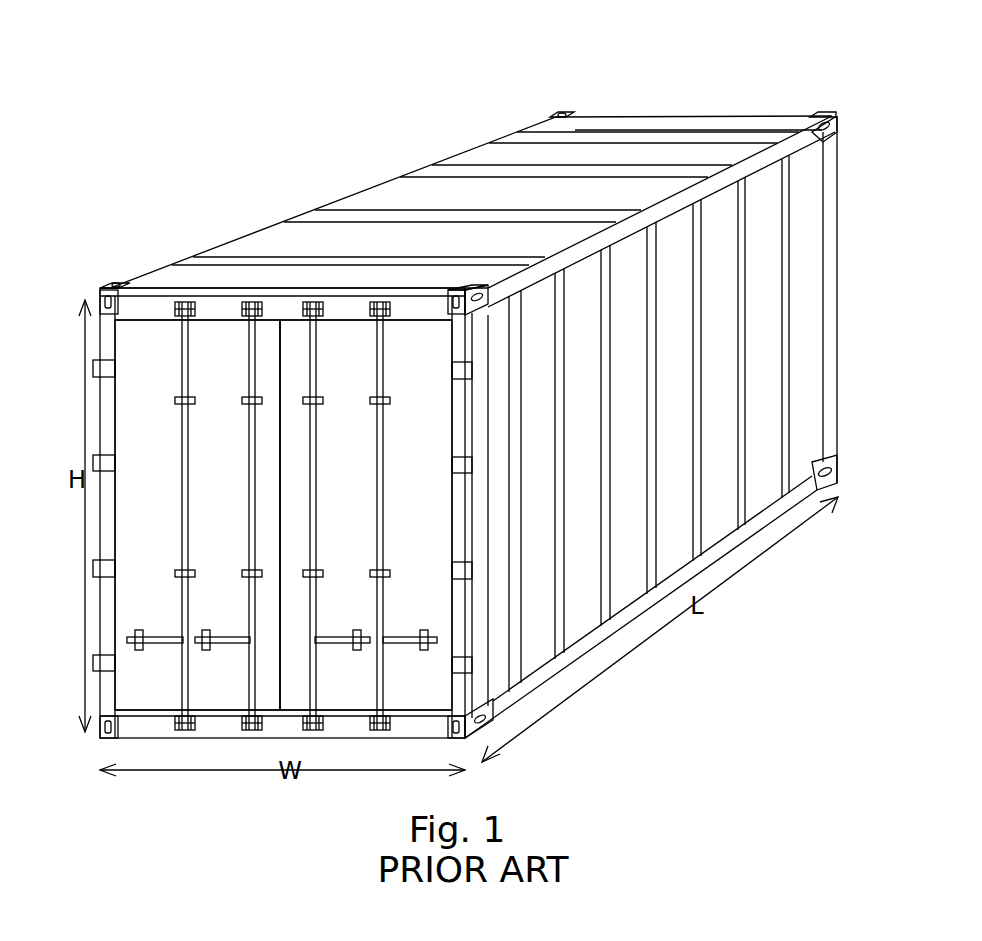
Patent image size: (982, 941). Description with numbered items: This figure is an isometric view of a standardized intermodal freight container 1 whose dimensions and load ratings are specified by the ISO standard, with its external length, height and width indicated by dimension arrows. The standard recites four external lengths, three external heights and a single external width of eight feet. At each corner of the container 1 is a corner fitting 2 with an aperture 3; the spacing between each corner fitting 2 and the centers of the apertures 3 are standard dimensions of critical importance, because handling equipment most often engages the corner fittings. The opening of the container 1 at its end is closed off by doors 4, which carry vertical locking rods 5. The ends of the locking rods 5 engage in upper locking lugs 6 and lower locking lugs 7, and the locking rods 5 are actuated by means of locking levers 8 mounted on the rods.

The intermodal freight container 1 is at (690, 72).
The corner fitting 2 is at (112, 290).
The aperture 3 is at (112, 727).
The door 4 is at (216, 489).
The locking rod 5 is at (317, 520).
The upper locking lug 6 is at (244, 306).
The lower locking lug 7 is at (242, 718).
The locking lever 8 is at (166, 637).